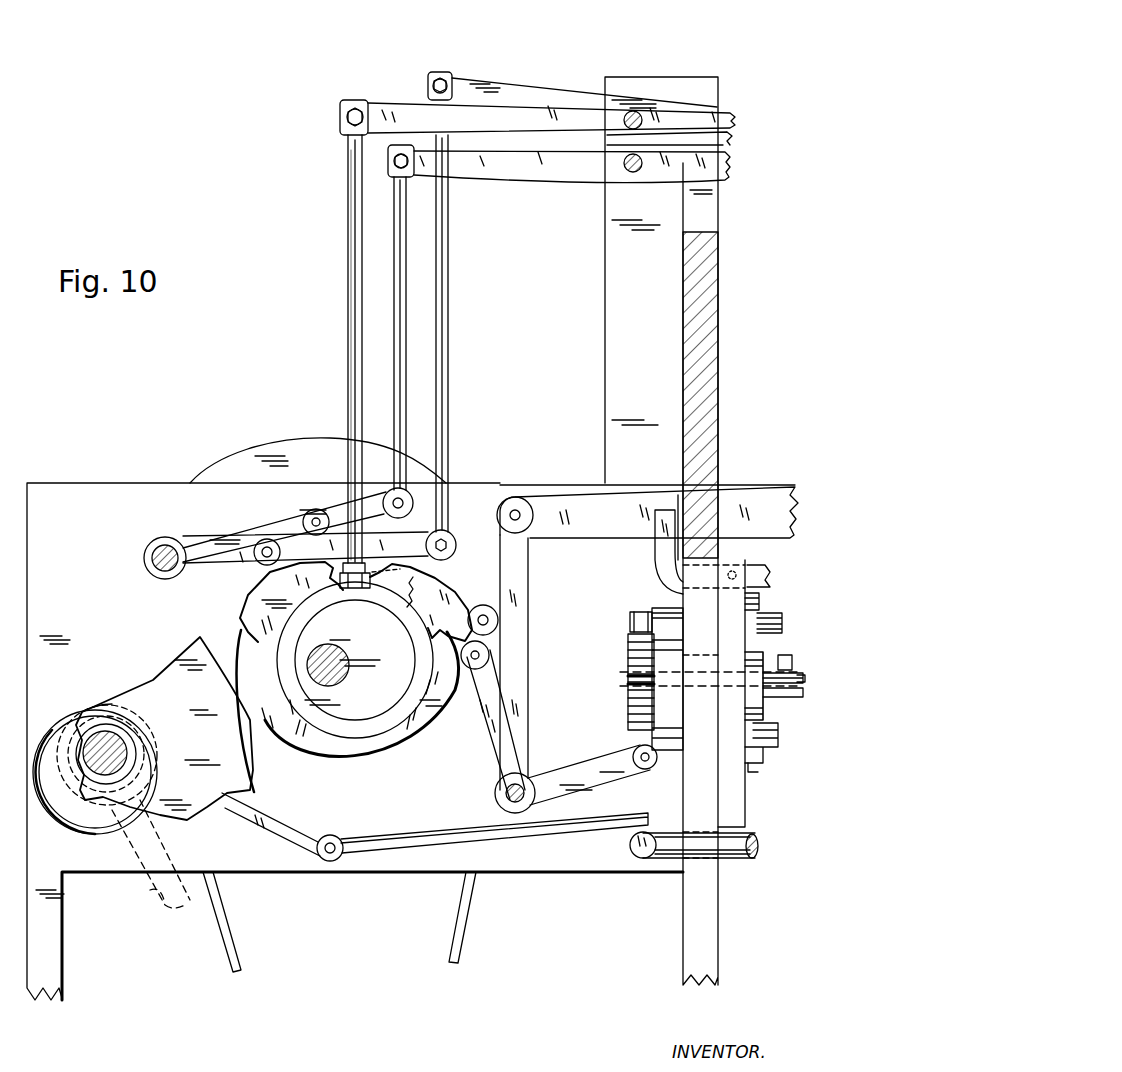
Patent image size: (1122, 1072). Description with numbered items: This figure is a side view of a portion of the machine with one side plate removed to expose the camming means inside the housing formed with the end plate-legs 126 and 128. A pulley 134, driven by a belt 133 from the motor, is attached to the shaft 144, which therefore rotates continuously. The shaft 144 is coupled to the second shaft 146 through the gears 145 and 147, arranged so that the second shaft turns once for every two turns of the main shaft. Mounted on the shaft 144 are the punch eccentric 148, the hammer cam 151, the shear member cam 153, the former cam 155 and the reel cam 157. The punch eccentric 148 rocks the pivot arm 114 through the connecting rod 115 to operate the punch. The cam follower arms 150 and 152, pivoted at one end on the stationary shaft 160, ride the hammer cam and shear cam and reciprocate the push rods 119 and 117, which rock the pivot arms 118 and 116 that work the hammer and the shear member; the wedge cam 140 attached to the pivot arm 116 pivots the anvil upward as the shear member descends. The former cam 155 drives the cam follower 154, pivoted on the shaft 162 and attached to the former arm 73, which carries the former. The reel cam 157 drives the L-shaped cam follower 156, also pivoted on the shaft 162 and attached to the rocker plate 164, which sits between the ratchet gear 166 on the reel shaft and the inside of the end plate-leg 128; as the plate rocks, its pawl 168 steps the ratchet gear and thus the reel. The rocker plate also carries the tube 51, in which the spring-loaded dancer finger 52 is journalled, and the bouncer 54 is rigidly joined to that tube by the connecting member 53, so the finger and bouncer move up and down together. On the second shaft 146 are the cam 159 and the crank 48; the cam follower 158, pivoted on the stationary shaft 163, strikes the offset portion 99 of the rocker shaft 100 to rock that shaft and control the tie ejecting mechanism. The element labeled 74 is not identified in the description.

The crank 48 is at (140, 852).
The tube 51 is at (790, 680).
The dancer finger 52 is at (780, 682).
The connecting member 53 is at (752, 760).
The bouncer 54 is at (782, 730).
The former arm 73 is at (588, 516).
The hook bracket 74 is at (660, 572).
The offset portion 99 is at (630, 846).
The rocker shaft 100 is at (750, 858).
The pivot arm 114 is at (526, 132).
The connecting rod 115 is at (346, 330).
The pivot arm 116 is at (519, 174).
The push rod 117 is at (411, 348).
The pivot arm 118 is at (523, 94).
The push rod 119 is at (443, 328).
The end plate-leg 126 is at (52, 976).
The end plate-leg 128 is at (686, 929).
The belt 133 is at (218, 922).
The pulley 134 is at (327, 466).
The wedge cam 140 is at (680, 288).
The shaft 144 is at (348, 654).
The gear 145 is at (279, 722).
The second shaft 146 is at (86, 786).
The gear 147 is at (216, 720).
The punch eccentric 148 is at (402, 664).
The cam follower arm 150 is at (442, 548).
The hammer cam 151 is at (279, 596).
The cam follower arm 152 is at (269, 528).
The shear member cam 153 is at (426, 574).
The cam follower 154 is at (520, 620).
The former cam 155 is at (438, 612).
The L-shaped cam follower 156 is at (496, 747).
The reel cam 157 is at (454, 702).
The cam follower 158 is at (103, 704).
The cam 159 is at (74, 724).
The stationary shaft 160 is at (152, 574).
The shaft 162 is at (498, 800).
The stationary shaft 163 is at (338, 840).
The rocker plate 164 is at (660, 600).
The ratchet gear 166 is at (628, 692).
The pawl 168 is at (630, 632).